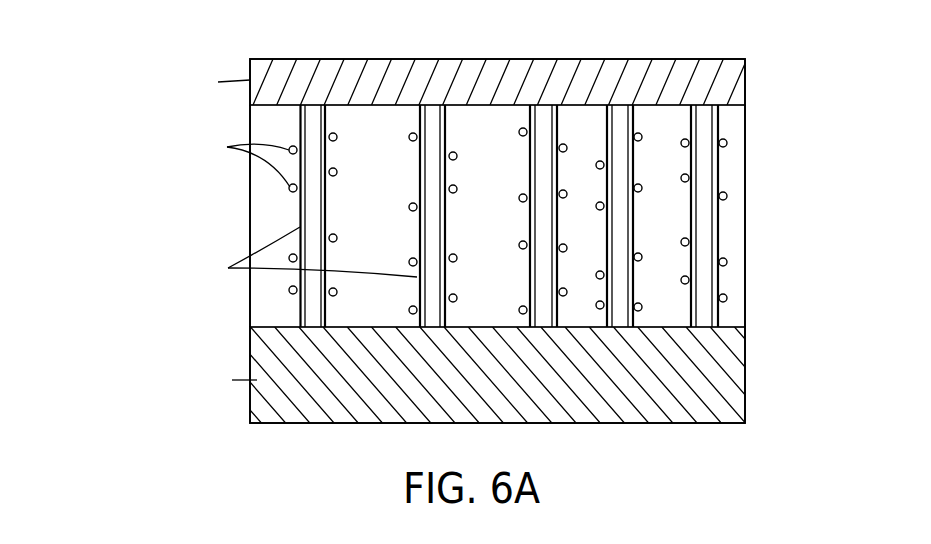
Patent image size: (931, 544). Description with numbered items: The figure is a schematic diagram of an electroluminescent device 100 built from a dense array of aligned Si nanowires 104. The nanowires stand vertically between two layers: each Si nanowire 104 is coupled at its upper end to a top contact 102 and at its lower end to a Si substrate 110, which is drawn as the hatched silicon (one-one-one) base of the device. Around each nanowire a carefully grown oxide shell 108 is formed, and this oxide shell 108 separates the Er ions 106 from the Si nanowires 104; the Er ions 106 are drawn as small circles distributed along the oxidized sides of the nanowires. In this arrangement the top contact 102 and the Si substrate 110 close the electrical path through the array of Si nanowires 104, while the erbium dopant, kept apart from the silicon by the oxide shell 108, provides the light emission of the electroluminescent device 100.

The electroluminescent device 100 is at (133, 462).
The top contact 102 is at (683, 60).
The Si nanowires 104 is at (705, 160).
The Er ions 106 is at (727, 195).
The oxide shell 108 is at (735, 285).
The Si substrate 110 is at (745, 357).